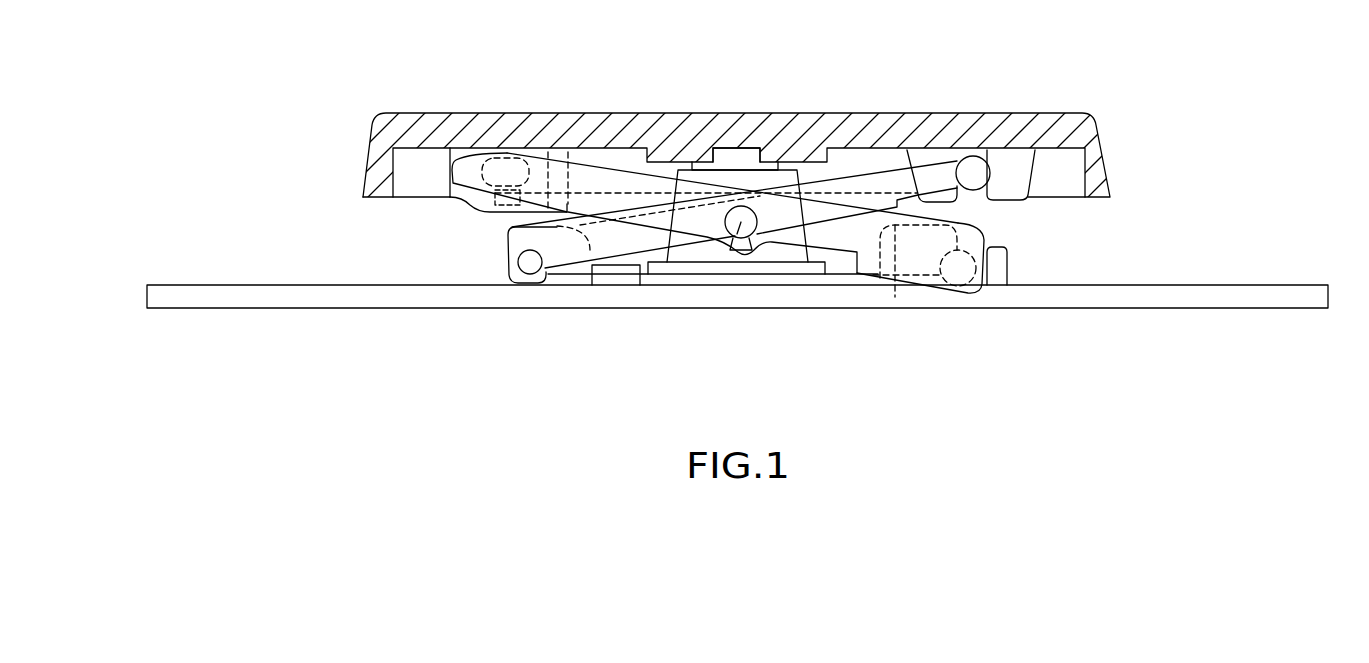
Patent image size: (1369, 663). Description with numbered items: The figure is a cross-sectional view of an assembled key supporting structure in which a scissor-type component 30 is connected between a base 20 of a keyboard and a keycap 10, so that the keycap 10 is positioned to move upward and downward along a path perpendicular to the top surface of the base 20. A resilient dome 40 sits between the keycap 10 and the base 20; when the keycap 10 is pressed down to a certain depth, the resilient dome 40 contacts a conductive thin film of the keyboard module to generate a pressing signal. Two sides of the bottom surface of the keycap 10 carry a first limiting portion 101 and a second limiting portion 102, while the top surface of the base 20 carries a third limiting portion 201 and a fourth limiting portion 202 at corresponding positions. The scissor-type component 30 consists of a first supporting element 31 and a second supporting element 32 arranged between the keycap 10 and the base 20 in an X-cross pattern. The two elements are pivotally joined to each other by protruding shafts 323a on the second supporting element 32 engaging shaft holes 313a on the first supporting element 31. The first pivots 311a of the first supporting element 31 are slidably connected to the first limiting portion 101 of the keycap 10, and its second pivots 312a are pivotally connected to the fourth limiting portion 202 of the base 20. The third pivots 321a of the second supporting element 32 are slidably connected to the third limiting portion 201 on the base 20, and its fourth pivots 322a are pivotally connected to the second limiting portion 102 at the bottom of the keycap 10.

The keycap 10 is at (1100, 118).
The base 20 is at (1055, 305).
The scissor-type component 30 is at (780, 216).
The first supporting element 31 is at (593, 178).
The second supporting element 32 is at (628, 240).
The resilient dome 40 is at (790, 166).
The first limiting portion 101 is at (568, 150).
The second limiting portion 102 is at (1018, 160).
The third limiting portion 201 is at (570, 272).
The fourth limiting portion 202 is at (907, 250).
The first pivots 311a is at (502, 170).
The second pivots 312a is at (960, 275).
The shaft hole 313a is at (748, 240).
The third pivots 321a is at (520, 265).
The fourth pivots 322a is at (970, 170).
The protruding shaft 323a is at (740, 226).